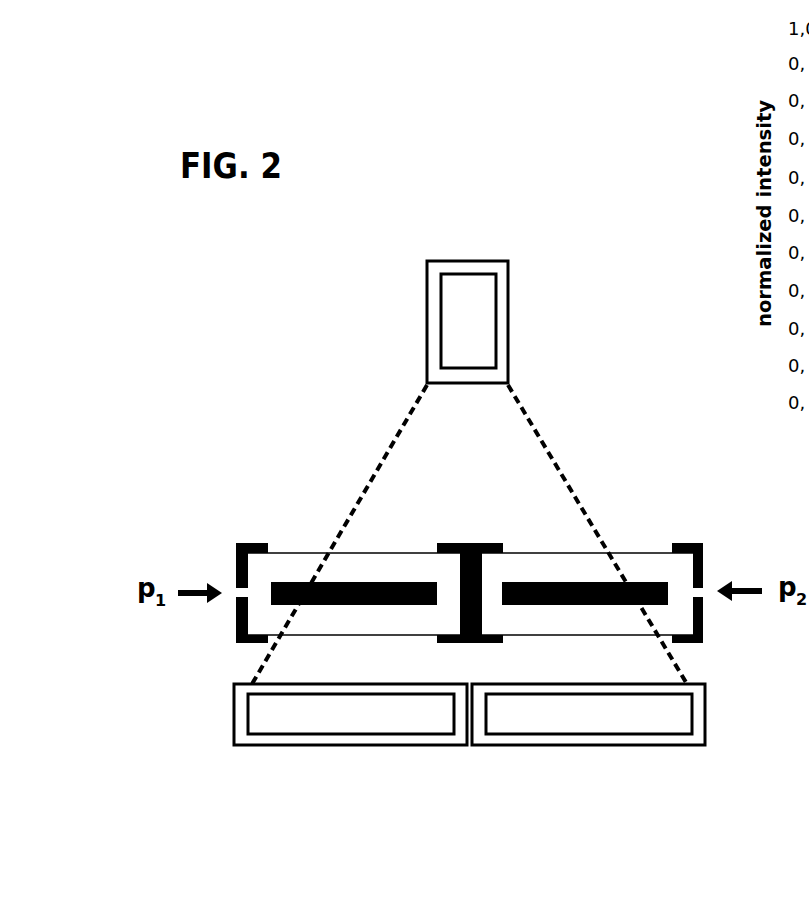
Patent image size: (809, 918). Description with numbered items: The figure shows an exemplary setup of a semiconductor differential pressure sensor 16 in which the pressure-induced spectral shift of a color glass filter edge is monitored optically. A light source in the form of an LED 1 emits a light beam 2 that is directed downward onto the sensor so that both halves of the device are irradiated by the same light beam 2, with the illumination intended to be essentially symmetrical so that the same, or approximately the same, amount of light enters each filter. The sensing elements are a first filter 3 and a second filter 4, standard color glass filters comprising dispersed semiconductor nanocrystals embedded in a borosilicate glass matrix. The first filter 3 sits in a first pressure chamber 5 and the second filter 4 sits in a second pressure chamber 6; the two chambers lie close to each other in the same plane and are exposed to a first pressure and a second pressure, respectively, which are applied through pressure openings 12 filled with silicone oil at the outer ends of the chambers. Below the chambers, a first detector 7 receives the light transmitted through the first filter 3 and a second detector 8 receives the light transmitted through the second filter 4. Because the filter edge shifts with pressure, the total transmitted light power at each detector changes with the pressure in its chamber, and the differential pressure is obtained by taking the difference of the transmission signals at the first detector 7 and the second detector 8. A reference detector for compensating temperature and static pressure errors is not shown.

The light source, LED 1 is at (462, 300).
The light beam 2 is at (497, 444).
The first filter 3 is at (365, 592).
The second filter 4 is at (573, 592).
The first pressure chamber 5 is at (381, 619).
The second pressure chamber 6 is at (544, 618).
The first detector 7 is at (317, 739).
The second detector 8 is at (619, 738).
The pressure opening filled with silicone oil 12 is at (473, 700).
The pressure sensor 16 is at (304, 368).